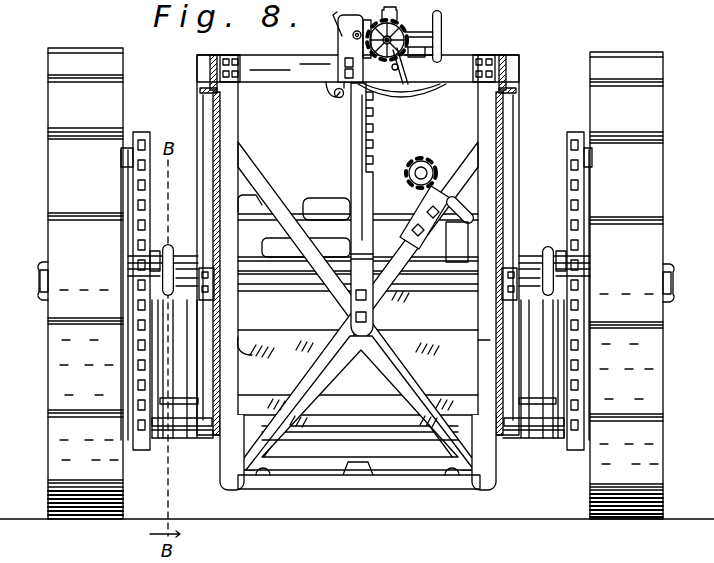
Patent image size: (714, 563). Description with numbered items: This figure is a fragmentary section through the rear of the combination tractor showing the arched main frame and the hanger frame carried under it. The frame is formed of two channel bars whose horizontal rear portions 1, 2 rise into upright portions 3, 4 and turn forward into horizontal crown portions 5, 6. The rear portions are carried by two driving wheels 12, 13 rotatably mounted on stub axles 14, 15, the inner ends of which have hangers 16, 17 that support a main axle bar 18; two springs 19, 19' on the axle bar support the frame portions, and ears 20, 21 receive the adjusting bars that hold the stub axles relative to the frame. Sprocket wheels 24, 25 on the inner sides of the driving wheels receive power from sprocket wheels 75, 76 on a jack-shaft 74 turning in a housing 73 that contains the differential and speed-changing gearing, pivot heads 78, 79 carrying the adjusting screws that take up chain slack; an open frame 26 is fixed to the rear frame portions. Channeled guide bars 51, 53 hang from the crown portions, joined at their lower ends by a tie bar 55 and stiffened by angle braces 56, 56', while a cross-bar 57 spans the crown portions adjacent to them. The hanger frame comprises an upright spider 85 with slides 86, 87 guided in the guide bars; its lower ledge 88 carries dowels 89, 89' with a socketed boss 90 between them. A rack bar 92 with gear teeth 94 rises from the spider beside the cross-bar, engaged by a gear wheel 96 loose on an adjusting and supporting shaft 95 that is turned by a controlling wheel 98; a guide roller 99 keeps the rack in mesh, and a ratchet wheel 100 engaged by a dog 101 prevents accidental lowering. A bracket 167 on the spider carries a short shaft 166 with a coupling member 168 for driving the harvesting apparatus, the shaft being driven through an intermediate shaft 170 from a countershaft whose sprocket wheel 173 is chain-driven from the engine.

The horizontal rear portion 1 is at (250, 349).
The horizontal rear portion 2 is at (478, 345).
The upright portion 3 is at (204, 193).
The upright portion 4 is at (514, 193).
The horizontal crown portion 5 is at (207, 58).
The horizontal crown portion 6 is at (505, 58).
The driving wheel 12 is at (48, 107).
The driving wheel 13 is at (663, 117).
The stub axle 14 is at (39, 282).
The stub axle 15 is at (673, 290).
The hanger 16 is at (165, 352).
The hanger 17 is at (545, 340).
The main axle bar 18 is at (310, 421).
The spring 19 is at (215, 452).
The spring 19' is at (500, 452).
The ear 20 is at (157, 305).
The ear 21 is at (560, 326).
The sprocket wheel 24 is at (149, 146).
The sprocket wheel 25 is at (569, 146).
The open frame 26 is at (358, 306).
The guide bar 51 is at (212, 126).
The guide bar 53 is at (503, 167).
The tie bar 55 is at (350, 405).
The angle brace 56 is at (194, 263).
The angle brace 56' is at (525, 267).
The cross-bar 57 is at (267, 63).
The housing 73 is at (272, 243).
The jack-shaft 74 is at (128, 268).
The sprocket wheel 75 is at (135, 259).
The sprocket wheel 76 is at (590, 268).
The pivot head 78 is at (167, 249).
The pivot head 79 is at (548, 240).
The spider 85 is at (323, 374).
The slide 86 is at (233, 212).
The slide 87 is at (472, 162).
The ledge 88 is at (312, 489).
The dowel 89 is at (259, 491).
The dowel 89' is at (455, 491).
The boss 90 is at (351, 480).
The rack bar 92 is at (351, 160).
The gear teeth 94 is at (374, 135).
The adjusting and supporting shaft 95 is at (395, 45).
The gear wheel 96 is at (398, 19).
The controlling wheel 98 is at (443, 32).
The guide roller 99 is at (339, 100).
The ratchet wheel 100 is at (389, 48).
The dog 101 is at (338, 29).
The short shaft 166 is at (421, 164).
The bracket 167 is at (409, 180).
The coupling member 168 is at (408, 172).
The intermediate shaft 170 is at (440, 250).
The sprocket wheel 173 is at (457, 232).